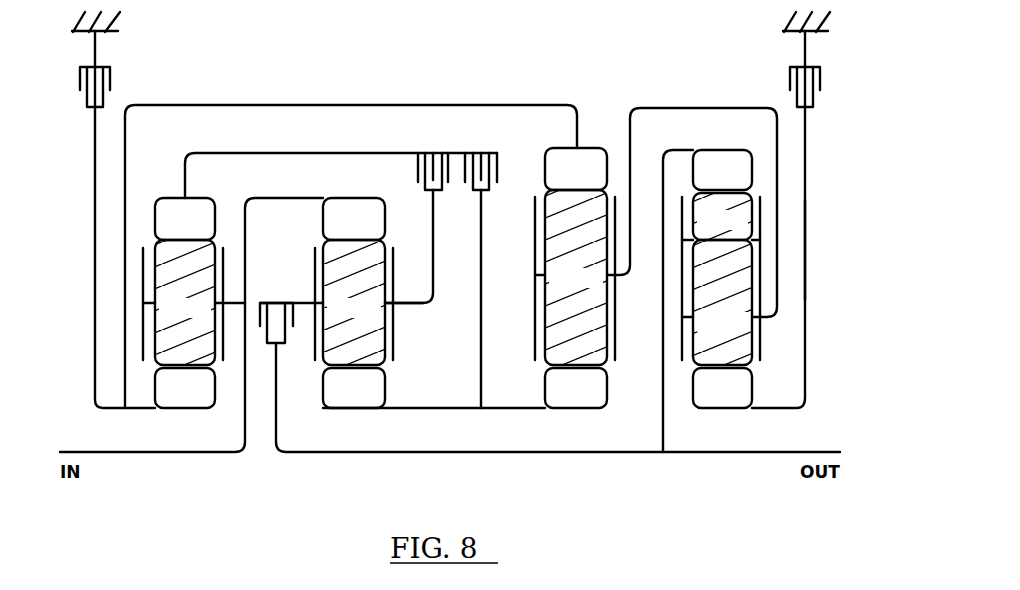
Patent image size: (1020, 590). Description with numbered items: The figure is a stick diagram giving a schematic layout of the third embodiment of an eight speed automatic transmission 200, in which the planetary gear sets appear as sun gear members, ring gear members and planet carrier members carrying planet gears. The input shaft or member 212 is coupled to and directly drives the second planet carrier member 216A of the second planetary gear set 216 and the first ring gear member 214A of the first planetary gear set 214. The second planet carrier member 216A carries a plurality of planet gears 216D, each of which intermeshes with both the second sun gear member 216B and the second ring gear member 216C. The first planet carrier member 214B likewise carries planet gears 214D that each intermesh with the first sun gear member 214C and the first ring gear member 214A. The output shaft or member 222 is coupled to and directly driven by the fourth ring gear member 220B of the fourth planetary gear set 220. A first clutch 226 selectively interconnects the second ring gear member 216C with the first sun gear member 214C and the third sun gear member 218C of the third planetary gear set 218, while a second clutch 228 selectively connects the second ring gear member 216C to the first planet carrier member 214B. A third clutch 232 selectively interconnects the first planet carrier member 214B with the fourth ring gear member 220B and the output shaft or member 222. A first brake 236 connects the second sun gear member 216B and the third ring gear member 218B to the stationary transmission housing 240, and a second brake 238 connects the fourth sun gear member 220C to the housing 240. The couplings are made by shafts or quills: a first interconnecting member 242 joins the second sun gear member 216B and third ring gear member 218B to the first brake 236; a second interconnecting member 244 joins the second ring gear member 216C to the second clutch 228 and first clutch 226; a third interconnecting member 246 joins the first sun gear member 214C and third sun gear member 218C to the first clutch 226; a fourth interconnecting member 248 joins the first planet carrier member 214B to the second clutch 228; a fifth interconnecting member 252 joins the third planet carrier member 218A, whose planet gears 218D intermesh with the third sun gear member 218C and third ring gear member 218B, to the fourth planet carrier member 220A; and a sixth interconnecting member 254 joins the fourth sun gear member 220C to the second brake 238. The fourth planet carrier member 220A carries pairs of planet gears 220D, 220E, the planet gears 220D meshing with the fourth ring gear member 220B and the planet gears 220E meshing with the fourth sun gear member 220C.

The eight speed transmission 200 is at (335, 57).
The input shaft or member 212 is at (117, 455).
The first planetary gear set 214 is at (430, 371).
The first ring gear member 214A is at (354, 219).
The first planet carrier member 214B is at (393, 323).
The first sun gear member 214C is at (354, 388).
The planet gears 214D is at (354, 302).
The second planetary gear set 216 is at (167, 371).
The second planet carrier member 216A is at (143, 343).
The second sun gear member 216B is at (185, 388).
The second ring gear member 216C is at (185, 219).
The planet gears 216D is at (185, 302).
The third planetary gear set 218 is at (551, 346).
The third planet carrier member 218A is at (535, 322).
The third ring gear member 218B is at (576, 169).
The third sun gear member 218C is at (576, 388).
The planet gears 218D is at (576, 277).
The fourth planetary gear set 220 is at (734, 345).
The fourth planet carrier member 220A is at (760, 343).
The fourth ring gear member 220B is at (722, 170).
The fourth sun gear member 220C is at (722, 388).
The planet gears 220D is at (722, 216).
The planet gears 220E is at (722, 302).
The output shaft or member 222 is at (822, 452).
The first clutch 226 is at (479, 152).
The second clutch 228 is at (435, 152).
The third clutch 232 is at (270, 303).
The first brake 236 is at (110, 72).
The second brake 238 is at (790, 90).
The transmission housing 240 is at (103, 32).
The first interconnecting member 242 is at (95, 170).
The second interconnecting member 244 is at (230, 153).
The third interconnecting member 246 is at (482, 290).
The fourth interconnecting member 248 is at (434, 288).
The fifth interconnecting member 252 is at (643, 106).
The sixth interconnecting member 254 is at (806, 212).